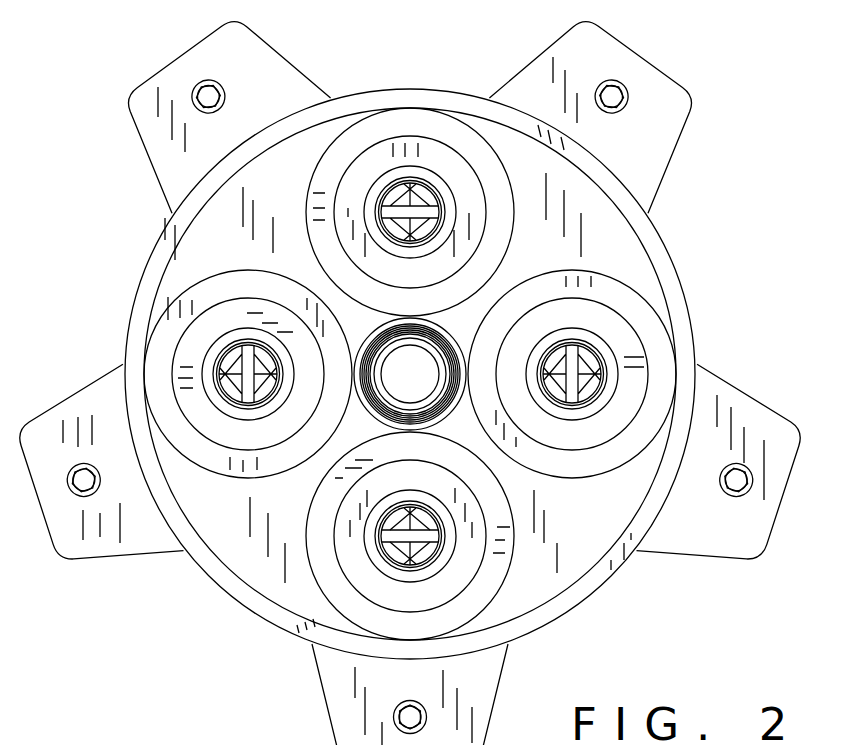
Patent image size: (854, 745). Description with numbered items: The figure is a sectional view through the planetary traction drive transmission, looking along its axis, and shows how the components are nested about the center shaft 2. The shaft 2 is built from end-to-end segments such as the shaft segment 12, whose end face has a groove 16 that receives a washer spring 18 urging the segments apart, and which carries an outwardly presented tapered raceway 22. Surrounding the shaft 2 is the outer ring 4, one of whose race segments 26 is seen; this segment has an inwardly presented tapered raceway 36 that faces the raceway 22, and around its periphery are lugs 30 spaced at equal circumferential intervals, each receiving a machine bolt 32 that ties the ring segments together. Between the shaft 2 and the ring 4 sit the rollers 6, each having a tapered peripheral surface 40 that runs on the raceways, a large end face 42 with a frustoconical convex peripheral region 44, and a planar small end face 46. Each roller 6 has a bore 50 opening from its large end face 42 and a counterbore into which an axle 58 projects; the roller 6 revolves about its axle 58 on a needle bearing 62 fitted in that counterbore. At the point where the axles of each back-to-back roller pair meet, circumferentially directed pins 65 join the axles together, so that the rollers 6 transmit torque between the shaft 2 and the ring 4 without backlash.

The center shaft 2 is at (350, 324).
The outer ring 4 is at (626, 575).
The roller 6 is at (146, 348).
The shaft segment 12 is at (450, 414).
The groove 16 is at (369, 415).
The washer spring 18 is at (578, 241).
The raceway 22 is at (452, 338).
The race segment 26 is at (245, 597).
The lug 30 is at (160, 151).
The machine bolt 32 is at (198, 84).
The tapered raceway 36 is at (616, 212).
The tapered peripheral surface 40 is at (197, 278).
The large end face 42 is at (200, 333).
The peripheral region 44 is at (158, 401).
The small end face 46 is at (410, 293).
The bore 50 is at (387, 563).
The axle 58 is at (403, 575).
The needle bearing 62 is at (447, 533).
The pin 65 is at (433, 563).